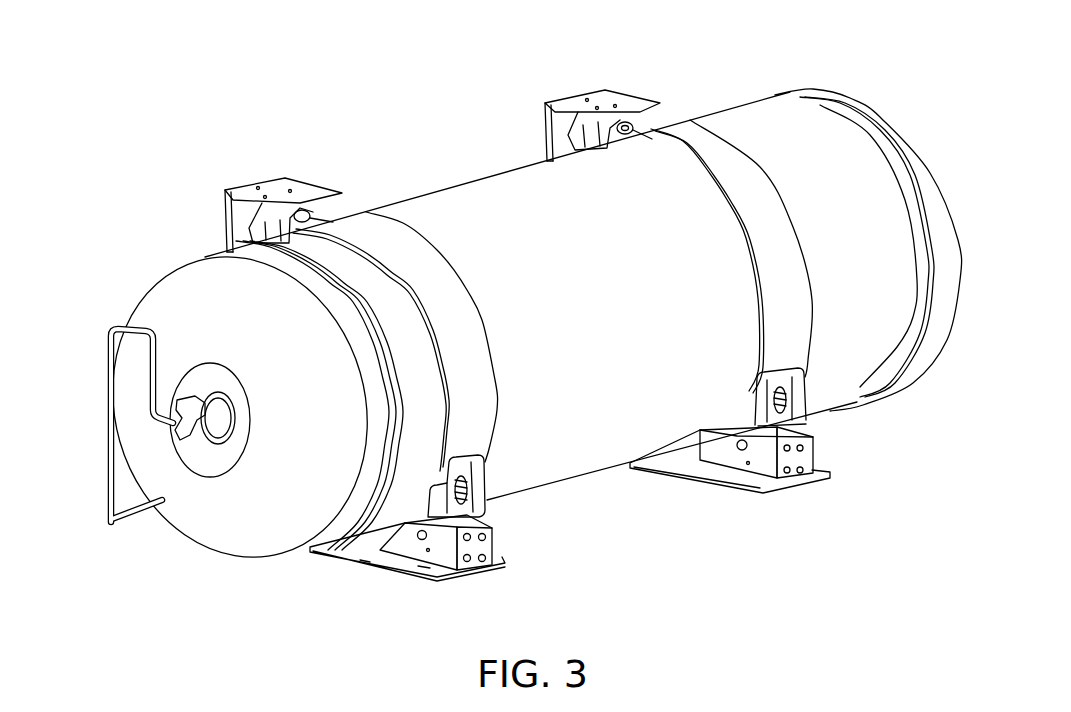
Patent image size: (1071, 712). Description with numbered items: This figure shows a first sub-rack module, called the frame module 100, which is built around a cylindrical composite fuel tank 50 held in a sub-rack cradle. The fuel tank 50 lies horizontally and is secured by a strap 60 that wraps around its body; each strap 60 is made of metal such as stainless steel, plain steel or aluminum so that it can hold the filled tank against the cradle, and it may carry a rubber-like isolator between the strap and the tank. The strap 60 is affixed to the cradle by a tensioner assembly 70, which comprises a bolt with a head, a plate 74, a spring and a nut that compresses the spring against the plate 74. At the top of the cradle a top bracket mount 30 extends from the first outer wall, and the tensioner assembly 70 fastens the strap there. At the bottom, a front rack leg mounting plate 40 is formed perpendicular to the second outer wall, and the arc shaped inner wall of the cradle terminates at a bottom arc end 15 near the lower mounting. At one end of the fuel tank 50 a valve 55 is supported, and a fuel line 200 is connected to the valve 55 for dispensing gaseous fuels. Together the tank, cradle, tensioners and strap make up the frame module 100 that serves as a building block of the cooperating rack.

The frame module 100 is at (132, 178).
The cylindrical composite fuel tank 50 is at (624, 341).
The strap 60 is at (470, 320).
The top bracket mount 30 is at (597, 94).
The tensioner assembly 70 is at (630, 112).
The front rack leg mounting plate 40 is at (503, 560).
The plate 74 is at (393, 553).
The bottom arc end 15 is at (688, 457).
The valve 55 is at (167, 417).
The fuel line 200 is at (107, 443).